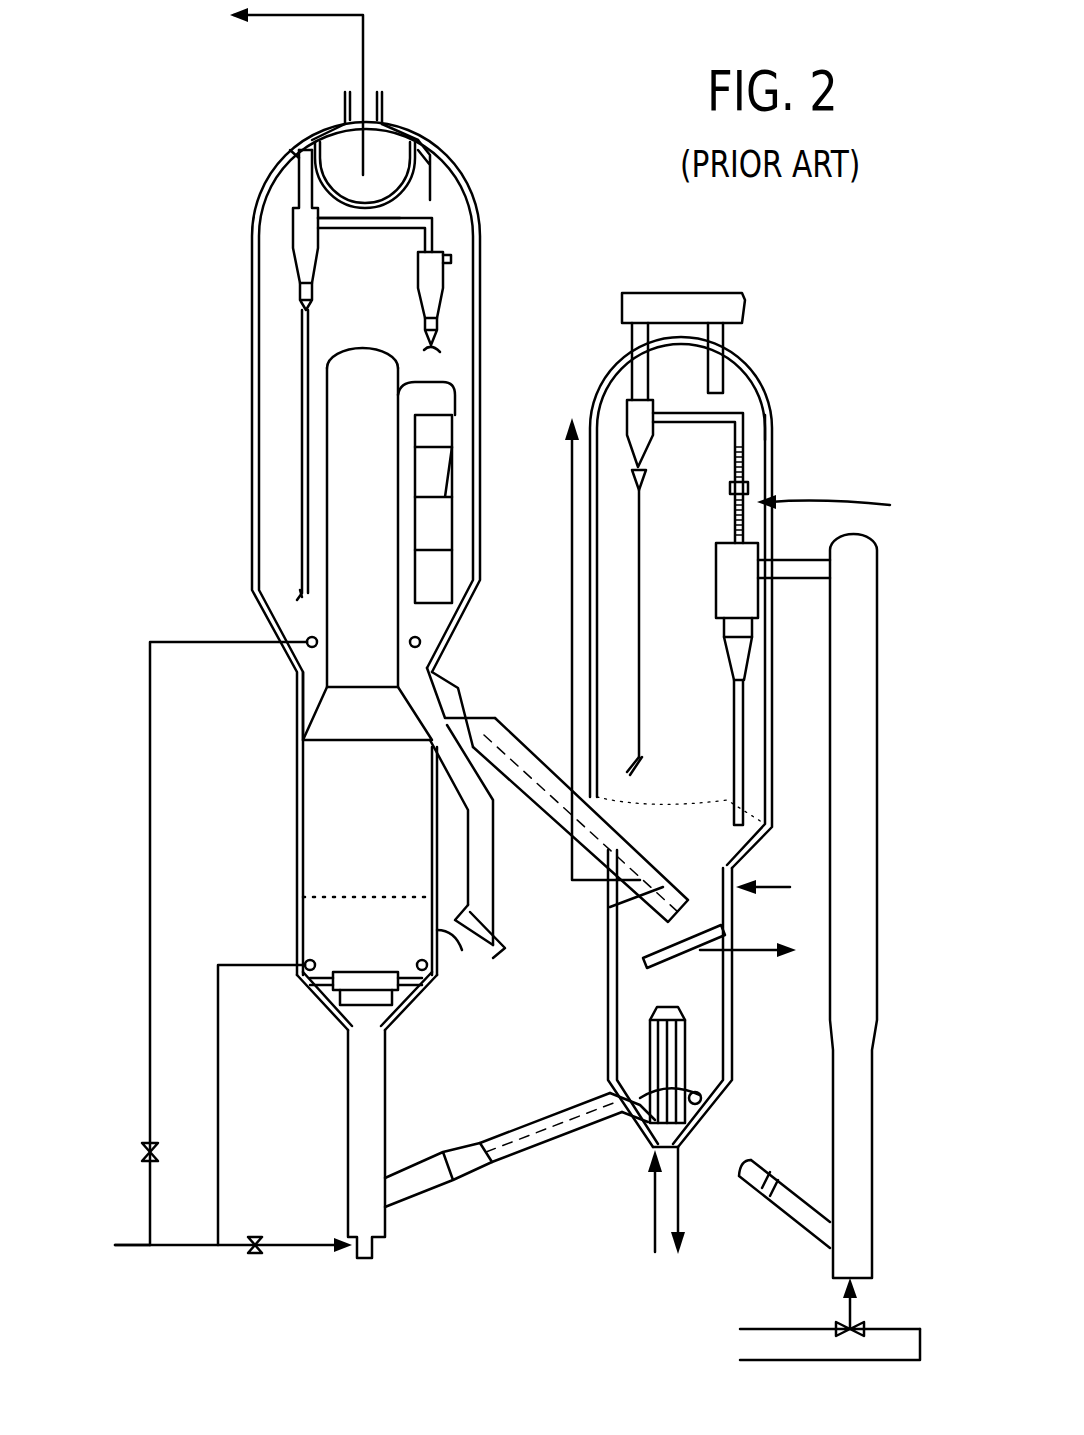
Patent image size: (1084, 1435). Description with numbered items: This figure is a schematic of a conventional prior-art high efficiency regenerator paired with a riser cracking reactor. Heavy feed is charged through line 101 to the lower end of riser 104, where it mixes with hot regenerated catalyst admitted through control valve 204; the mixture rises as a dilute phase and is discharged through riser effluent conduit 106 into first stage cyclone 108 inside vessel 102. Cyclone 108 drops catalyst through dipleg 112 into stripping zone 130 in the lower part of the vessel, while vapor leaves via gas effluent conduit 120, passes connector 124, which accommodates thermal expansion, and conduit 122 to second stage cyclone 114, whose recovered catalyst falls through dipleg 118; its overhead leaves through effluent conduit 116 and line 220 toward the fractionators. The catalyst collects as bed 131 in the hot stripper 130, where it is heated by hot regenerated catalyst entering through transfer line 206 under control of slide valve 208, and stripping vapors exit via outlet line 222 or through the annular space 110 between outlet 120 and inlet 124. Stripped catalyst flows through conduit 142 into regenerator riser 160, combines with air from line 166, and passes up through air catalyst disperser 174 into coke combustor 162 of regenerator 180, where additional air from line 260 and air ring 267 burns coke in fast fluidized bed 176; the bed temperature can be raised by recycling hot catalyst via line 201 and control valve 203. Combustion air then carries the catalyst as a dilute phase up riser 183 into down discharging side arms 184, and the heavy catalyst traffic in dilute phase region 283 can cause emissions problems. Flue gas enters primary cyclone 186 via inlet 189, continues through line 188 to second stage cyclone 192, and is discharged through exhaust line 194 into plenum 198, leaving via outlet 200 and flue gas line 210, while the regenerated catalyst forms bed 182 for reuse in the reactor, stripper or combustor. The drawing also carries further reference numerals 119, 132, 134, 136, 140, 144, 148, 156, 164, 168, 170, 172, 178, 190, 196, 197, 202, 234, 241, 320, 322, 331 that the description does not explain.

The feed line 101 is at (860, 1362).
The vessel 102 is at (775, 458).
The riser cracking FCC reactor 104 is at (905, 1195).
The riser effluent conduit 106 is at (820, 582).
The first stage cyclone 108 is at (760, 598).
The annular space 110 is at (832, 499).
The dipleg 112 is at (745, 772).
The second stage reactor cyclone 114 is at (655, 400).
The effluent conduit 116 is at (625, 350).
The dipleg 118 is at (642, 575).
The dipleg outlet 119 is at (635, 740).
The gas effluent conduit 120 is at (732, 522).
The conduit 122 is at (765, 418).
The connector 124 is at (748, 486).
The stripping zone 130 is at (608, 968).
The catalyst bed 131 is at (745, 856).
The stripper baffles 132 is at (742, 1018).
The stripper bottom 134 is at (718, 1127).
The steam distributor 136 is at (733, 1080).
The stripping steam inlet 140 is at (655, 1200).
The conduit 142 is at (548, 1110).
The conduit 144 is at (472, 1188).
The conduit inlet 148 is at (618, 1135).
The catalyst outlet 156 is at (712, 1232).
The regenerator riser 160 is at (347, 1095).
The coke combustor 162 is at (297, 860).
The lift air line 164 is at (118, 1250).
The air line 166 is at (335, 1240).
The valve 168 is at (250, 1240).
The air conduit 170 is at (185, 870).
The valve 172 is at (150, 1142).
The air catalyst disperser 174 is at (330, 1012).
The fast fluidized bed 176 is at (310, 930).
The air inlet 178 is at (307, 640).
The regenerator 180 is at (252, 285).
The regenerated catalyst bed 182 is at (300, 688).
The regenerator riser 183 is at (382, 511).
The down discharging side arms 184 is at (426, 492).
The primary cyclone 186 is at (416, 270).
The line 188 is at (398, 226).
The inlet 189 is at (452, 258).
The dipleg valve 190 is at (442, 348).
The second stage cyclone 192 is at (322, 238).
The exhaust line 194 is at (292, 160).
The cyclone dipleg 196 is at (300, 380).
The dipleg outlet 197 is at (300, 590).
The plenum 198 is at (432, 160).
The outlet 200 is at (382, 108).
The recycle line 201 is at (465, 900).
The nozzle 202 is at (475, 960).
The control valve 203 is at (462, 960).
The control valve 204 is at (798, 1205).
The transfer line 206 is at (455, 665).
The slide valve 208 is at (468, 720).
The flue gas line 210 is at (330, 17).
The line 220 is at (692, 290).
The outlet line 222 is at (735, 345).
The flow arrow 234 is at (777, 904).
The steam valve 241 is at (800, 1325).
The air line 260 is at (240, 1068).
The air ring 267 is at (300, 990).
The dilute phase region 283 is at (386, 336).
The vapor flow arrow 320 is at (745, 957).
The vent line 322 is at (572, 517).
The stripping device 331 is at (703, 1055).